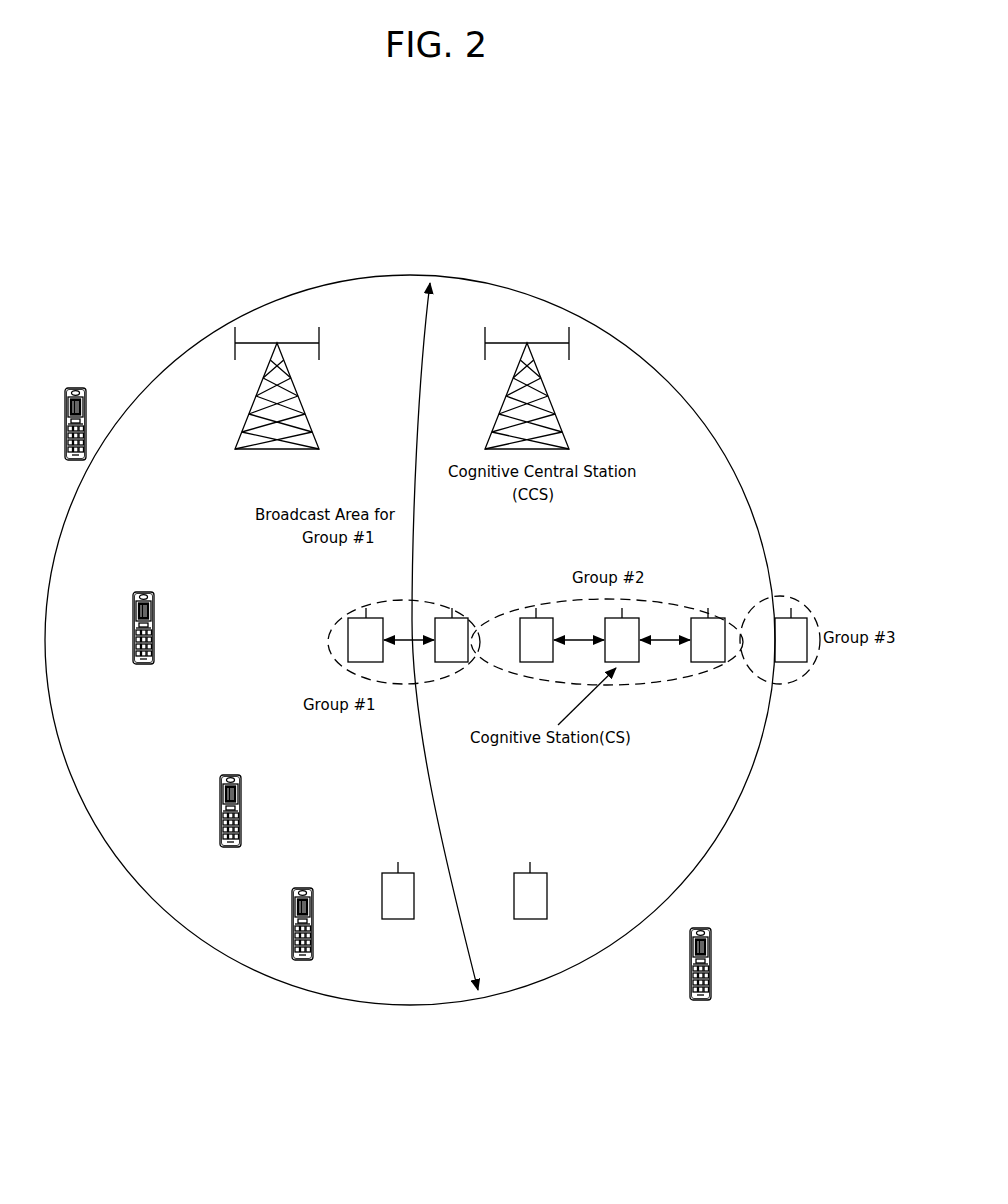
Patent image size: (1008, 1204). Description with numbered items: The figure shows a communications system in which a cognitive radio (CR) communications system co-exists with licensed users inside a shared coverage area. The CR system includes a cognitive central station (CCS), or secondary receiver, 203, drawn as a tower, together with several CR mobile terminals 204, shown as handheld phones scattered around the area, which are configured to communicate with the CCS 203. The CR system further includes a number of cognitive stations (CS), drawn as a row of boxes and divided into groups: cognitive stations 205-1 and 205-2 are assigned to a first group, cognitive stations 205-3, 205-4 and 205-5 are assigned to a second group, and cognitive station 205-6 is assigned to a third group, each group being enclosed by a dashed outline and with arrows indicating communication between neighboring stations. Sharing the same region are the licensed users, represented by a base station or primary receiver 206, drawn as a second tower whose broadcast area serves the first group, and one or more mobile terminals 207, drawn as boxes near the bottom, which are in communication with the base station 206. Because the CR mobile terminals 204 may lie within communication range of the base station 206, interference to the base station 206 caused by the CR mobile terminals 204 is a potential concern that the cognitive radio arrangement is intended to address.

The cognitive central station 203 is at (548, 396).
The CR mobile terminals 204 is at (76, 388).
The cognitive station 205-1 is at (348, 628).
The cognitive station 205-2 is at (468, 618).
The cognitive station 205-3 is at (530, 618).
The cognitive station 205-4 is at (639, 628).
The cognitive station 205-5 is at (705, 662).
The cognitive station 205-6 is at (790, 662).
The base station 206 is at (250, 410).
The mobile terminals 207 is at (397, 919).